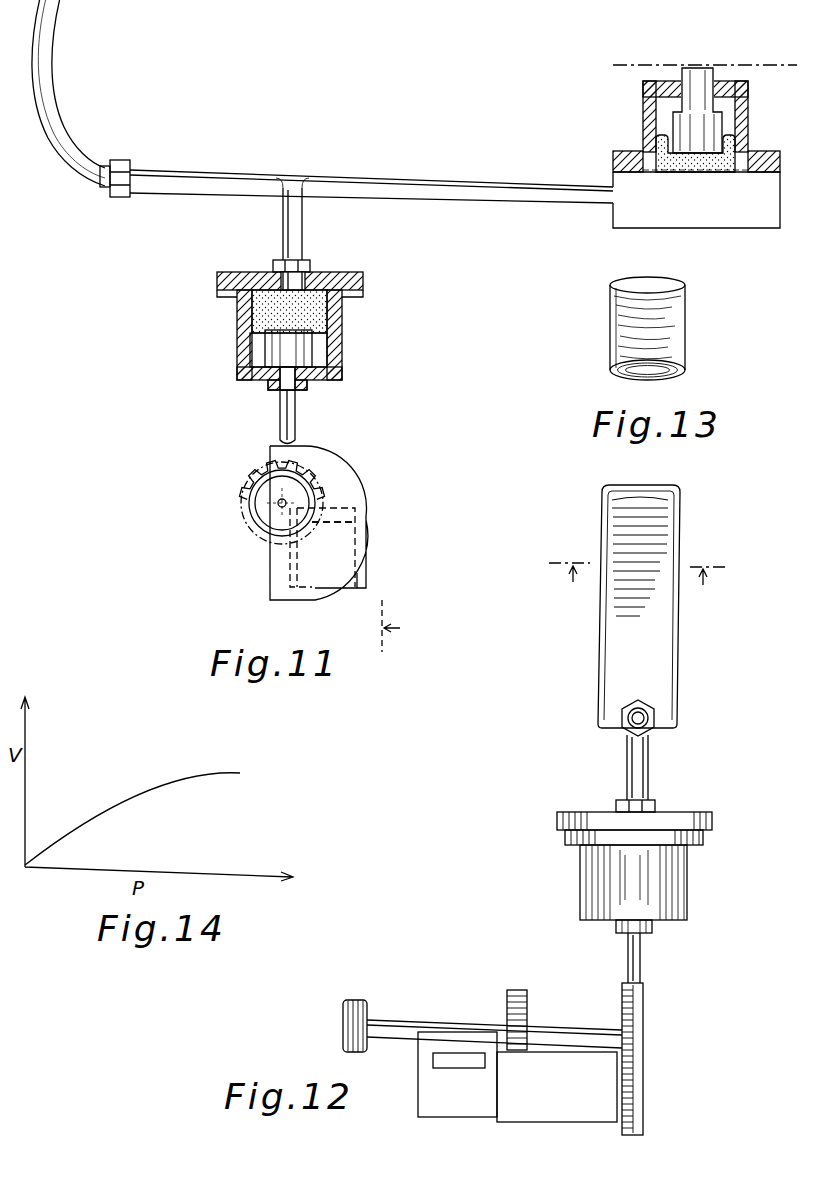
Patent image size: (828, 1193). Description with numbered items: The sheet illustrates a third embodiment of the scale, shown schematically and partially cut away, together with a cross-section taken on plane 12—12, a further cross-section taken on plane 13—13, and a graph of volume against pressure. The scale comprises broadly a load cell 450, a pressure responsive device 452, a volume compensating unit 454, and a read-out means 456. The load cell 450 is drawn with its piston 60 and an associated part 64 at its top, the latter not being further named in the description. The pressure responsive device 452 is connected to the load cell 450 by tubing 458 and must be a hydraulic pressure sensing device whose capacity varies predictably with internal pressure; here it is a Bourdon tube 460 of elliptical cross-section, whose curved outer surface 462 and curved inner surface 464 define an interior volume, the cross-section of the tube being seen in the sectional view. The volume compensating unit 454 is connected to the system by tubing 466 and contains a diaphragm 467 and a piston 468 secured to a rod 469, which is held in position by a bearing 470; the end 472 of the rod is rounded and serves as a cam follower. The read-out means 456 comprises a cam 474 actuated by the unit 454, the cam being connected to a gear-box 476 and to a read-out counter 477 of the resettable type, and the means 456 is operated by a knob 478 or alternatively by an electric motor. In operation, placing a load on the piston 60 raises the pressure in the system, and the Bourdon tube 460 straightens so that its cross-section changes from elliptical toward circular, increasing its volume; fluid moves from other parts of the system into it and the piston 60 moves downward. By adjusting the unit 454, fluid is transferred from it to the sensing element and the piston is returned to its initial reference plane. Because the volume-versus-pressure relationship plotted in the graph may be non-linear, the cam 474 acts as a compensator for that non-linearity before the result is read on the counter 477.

In FIG. 11, the pressure responsive device 452 is at (66, 34).
In FIG. 11, the Bourdon tube 460 is at (63, 128).
In FIG. 11, the tubing 458 is at (410, 187).
In FIG. 12, the tubing 458 is at (650, 718).
In FIG. 11, the tubing 466 is at (297, 233).
In FIG. 12, the tubing 466 is at (650, 772).
In FIG. 11, the volume compensating unit 454 is at (219, 379).
In FIG. 12, the volume compensating unit 454 is at (690, 876).
In FIG. 11, the diaphragm 467 is at (252, 322).
In FIG. 11, the piston 468 is at (300, 354).
In FIG. 11, the bearing 470 is at (306, 389).
In FIG. 11, the rod 469 is at (296, 414).
In FIG. 12, the rod 469 is at (643, 960).
In FIG. 11, the rounded end of the rod 472 is at (297, 446).
In FIG. 11, the cam 474 is at (338, 490).
In FIG. 12, the cam 474 is at (645, 1020).
In FIG. 11, the knob 478 is at (262, 495).
In FIG. 12, the knob 478 is at (360, 1000).
In FIG. 11, the read-out means 456 is at (220, 527).
In FIG. 11, the section plane 12— 12 is at (404, 626).
In FIG. 12, the section plane 13— 13 is at (637, 588).
In FIG. 11, the load cell 450 is at (621, 126).
In FIG. 11, the pin 64 is at (690, 68).
In FIG. 11, the piston 60 is at (715, 82).
In FIG. 13, the curved inner surface 464 is at (617, 369).
In FIG. 12, the curved outer surface 462 is at (651, 664).
In FIG. 12, the gear-box 476 is at (565, 1092).
In FIG. 12, the read-out counter 477 is at (465, 1104).